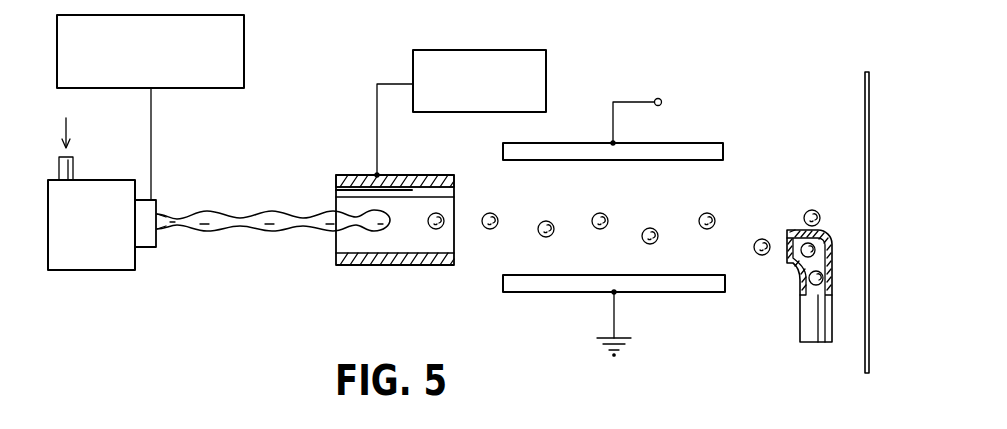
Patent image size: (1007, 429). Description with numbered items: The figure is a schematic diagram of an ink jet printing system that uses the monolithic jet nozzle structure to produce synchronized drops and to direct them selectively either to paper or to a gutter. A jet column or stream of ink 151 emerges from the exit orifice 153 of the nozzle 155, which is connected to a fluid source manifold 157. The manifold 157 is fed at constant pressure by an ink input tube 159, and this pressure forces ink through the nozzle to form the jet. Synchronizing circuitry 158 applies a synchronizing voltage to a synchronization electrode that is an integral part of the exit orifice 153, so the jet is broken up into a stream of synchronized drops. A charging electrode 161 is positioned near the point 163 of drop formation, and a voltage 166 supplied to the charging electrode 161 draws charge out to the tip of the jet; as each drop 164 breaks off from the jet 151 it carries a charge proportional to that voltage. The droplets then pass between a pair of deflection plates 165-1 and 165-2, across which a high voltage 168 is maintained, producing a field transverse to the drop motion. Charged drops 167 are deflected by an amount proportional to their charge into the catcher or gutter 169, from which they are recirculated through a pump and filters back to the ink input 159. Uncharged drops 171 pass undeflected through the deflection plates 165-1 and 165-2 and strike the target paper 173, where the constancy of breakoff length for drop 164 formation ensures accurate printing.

The jet stream of ink 151 is at (271, 216).
The exit orifice 153 is at (160, 214).
The nozzle 155 is at (148, 238).
The fluid source manifold 157 is at (105, 263).
The synchronizing circuitry 158 is at (236, 27).
The ink input tube 159 is at (74, 161).
The charging electrode 161 is at (353, 182).
The point of drop formation 163 is at (406, 220).
The drop 164 is at (443, 228).
The deflection plate 165-1 is at (596, 149).
The deflection plate 165-2 is at (681, 287).
The charging voltage 166 is at (532, 58).
The charged drops 167 is at (549, 237).
The high voltage 168 is at (658, 97).
The gutter 169 is at (807, 316).
The uncharged drops 171 is at (806, 213).
The target paper 173 is at (870, 82).